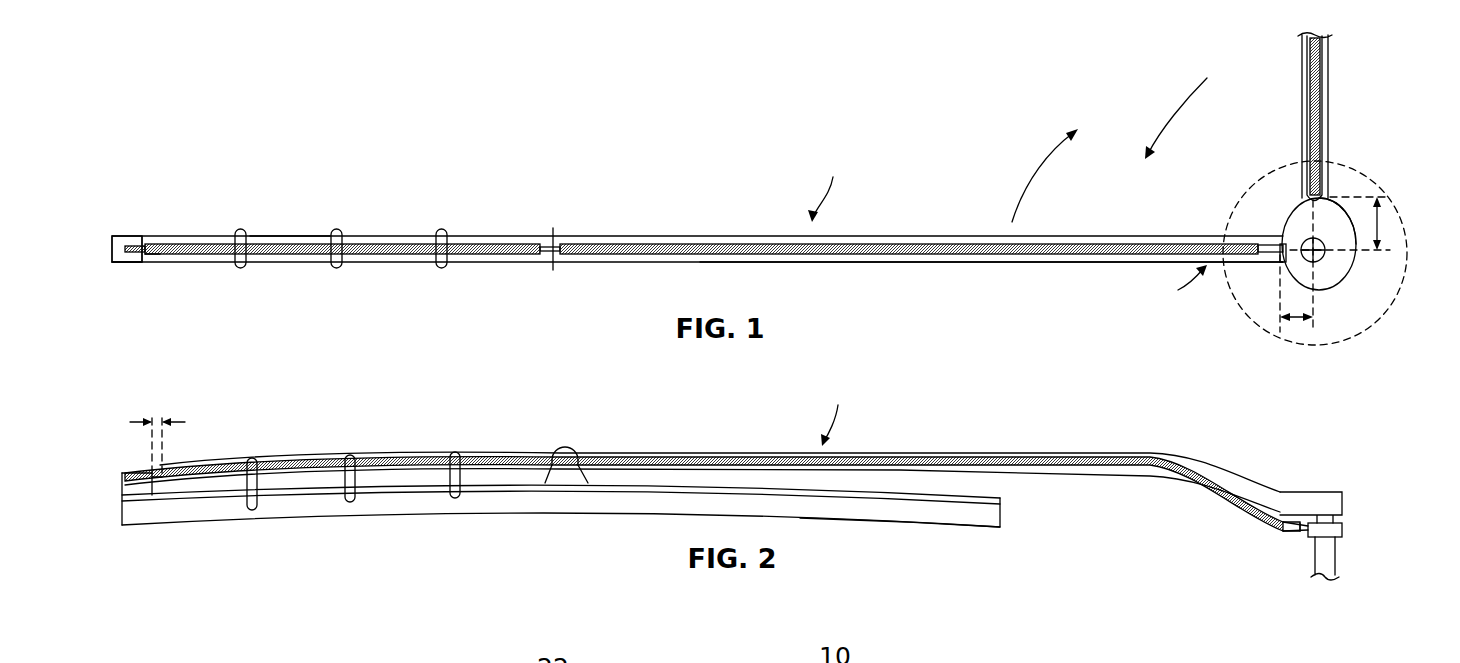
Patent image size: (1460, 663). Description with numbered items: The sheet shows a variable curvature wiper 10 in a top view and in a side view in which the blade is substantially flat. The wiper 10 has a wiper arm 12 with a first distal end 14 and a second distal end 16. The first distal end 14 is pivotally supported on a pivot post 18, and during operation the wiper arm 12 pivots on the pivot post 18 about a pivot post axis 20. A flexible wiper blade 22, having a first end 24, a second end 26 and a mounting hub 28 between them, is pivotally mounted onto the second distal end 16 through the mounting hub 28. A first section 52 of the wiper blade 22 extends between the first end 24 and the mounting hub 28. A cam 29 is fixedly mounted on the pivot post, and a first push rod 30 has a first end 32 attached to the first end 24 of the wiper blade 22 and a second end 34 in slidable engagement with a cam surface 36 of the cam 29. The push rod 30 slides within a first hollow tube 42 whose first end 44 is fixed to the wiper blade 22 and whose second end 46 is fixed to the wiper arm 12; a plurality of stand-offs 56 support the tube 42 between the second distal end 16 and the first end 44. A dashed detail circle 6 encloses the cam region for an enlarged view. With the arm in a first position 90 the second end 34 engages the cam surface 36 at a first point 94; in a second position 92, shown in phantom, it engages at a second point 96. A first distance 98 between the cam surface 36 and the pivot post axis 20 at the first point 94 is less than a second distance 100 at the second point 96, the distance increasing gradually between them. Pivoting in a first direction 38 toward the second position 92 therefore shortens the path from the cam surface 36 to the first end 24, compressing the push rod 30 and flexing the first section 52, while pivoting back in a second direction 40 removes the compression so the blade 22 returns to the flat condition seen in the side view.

In FIG. 1, the section indicator 6 is at (1310, 350).
In FIG. 1, the variable curvature wiper 10 is at (829, 185).
In FIG. 2, the variable curvature wiper 10 is at (838, 412).
In FIG. 1, the wiper arm 12 is at (1302, 120).
In FIG. 2, the wiper arm 12 is at (1225, 480).
In FIG. 2, the first distal end 14 is at (1309, 496).
In FIG. 1, the second distal end 16 is at (548, 256).
In FIG. 2, the second distal end 16 is at (574, 451).
In FIG. 1, the pivot post 18 is at (1328, 252).
In FIG. 2, the pivot post 18 is at (1332, 565).
In FIG. 1, the pivot post axis 20 is at (1322, 260).
In FIG. 1, the flexible wiper blade 22 is at (402, 263).
In FIG. 2, the flexible wiper blade 22 is at (392, 515).
In FIG. 1, the first end 24 is at (112, 246).
In FIG. 2, the first end 24 is at (122, 512).
In FIG. 1, the second end 26 is at (968, 262).
In FIG. 2, the second end 26 is at (1002, 522).
In FIG. 1, the mounting hub 28 is at (556, 238).
In FIG. 2, the mounting hub 28 is at (560, 449).
In FIG. 1, the cam 29 is at (1322, 256).
In FIG. 2, the cam 29 is at (1345, 530).
In FIG. 1, the first push rod 30 is at (132, 247).
In FIG. 2, the first push rod 30 is at (153, 477).
In FIG. 1, the first end 32 is at (127, 258).
In FIG. 2, the first end 32 is at (122, 476).
In FIG. 2, the second end 34 is at (1295, 535).
In FIG. 1, the cam surface 36 is at (1283, 225).
In FIG. 2, the cam surface 36 is at (1300, 533).
In FIG. 1, the first direction 38 is at (1020, 188).
In FIG. 1, the second direction 40 is at (1170, 115).
In FIG. 1, the first hollow tube 42 is at (696, 244).
In FIG. 2, the first hollow tube 42 is at (684, 457).
In FIG. 1, the first end 44 is at (152, 253).
In FIG. 2, the first end 44 is at (158, 476).
In FIG. 2, the second end 46 is at (1290, 530).
In FIG. 1, the first section 52 is at (306, 236).
In FIG. 2, the first section 52 is at (298, 503).
In FIG. 1, the stand-offs 56 is at (240, 230).
In FIG. 2, the stand-offs 56 is at (250, 462).
In FIG. 1, the first position 90 is at (1176, 285).
In FIG. 1, the second position 92 is at (1328, 148).
In FIG. 1, the first point 94 is at (1283, 272).
In FIG. 1, the second point 96 is at (1335, 196).
In FIG. 1, the first distance 98 is at (1288, 328).
In FIG. 1, the second distance 100 is at (1380, 222).